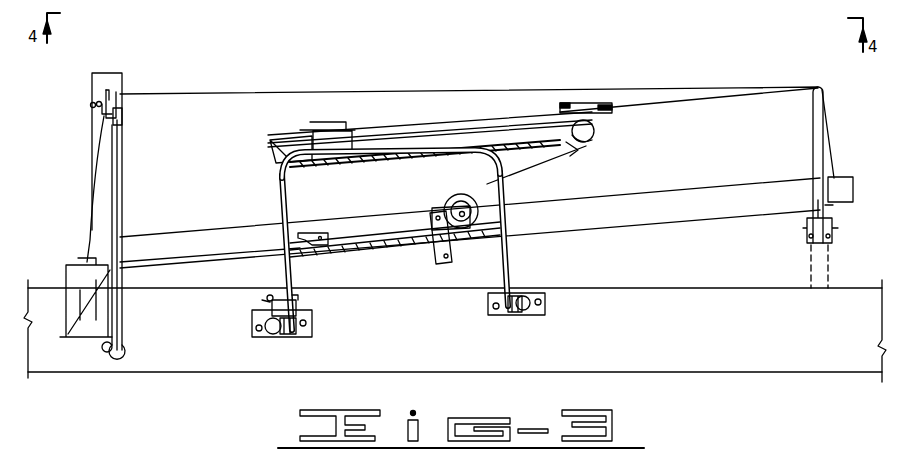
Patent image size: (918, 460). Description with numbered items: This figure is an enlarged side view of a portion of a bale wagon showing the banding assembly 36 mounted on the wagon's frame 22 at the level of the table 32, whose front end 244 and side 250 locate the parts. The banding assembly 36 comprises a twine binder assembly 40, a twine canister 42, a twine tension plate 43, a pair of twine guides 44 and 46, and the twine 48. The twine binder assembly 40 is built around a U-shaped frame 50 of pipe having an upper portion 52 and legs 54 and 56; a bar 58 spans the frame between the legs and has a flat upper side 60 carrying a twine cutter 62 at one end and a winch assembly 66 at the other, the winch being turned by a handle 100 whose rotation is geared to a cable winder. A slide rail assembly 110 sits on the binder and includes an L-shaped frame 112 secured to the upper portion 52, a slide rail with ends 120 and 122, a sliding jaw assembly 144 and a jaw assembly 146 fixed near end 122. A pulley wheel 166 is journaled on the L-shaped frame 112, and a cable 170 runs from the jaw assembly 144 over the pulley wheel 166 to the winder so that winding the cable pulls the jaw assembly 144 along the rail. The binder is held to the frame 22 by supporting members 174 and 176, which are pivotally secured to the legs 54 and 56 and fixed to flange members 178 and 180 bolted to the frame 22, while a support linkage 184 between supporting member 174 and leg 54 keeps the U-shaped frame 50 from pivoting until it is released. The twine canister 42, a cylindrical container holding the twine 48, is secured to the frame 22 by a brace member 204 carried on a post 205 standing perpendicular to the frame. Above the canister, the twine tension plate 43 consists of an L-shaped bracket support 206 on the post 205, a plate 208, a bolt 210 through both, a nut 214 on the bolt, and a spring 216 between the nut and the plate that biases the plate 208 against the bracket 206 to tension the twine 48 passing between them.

The frame 22 is at (684, 362).
The table 32 is at (682, 205).
The banding assembly 36 is at (216, 130).
The twine binder assembly 40 is at (384, 116).
The twine canister 42 is at (74, 280).
The twine tension plate 43 is at (112, 94).
The twine guide 44 is at (822, 459).
The twine guide 46 is at (824, 90).
The twine 48 is at (478, 94).
The U-shaped frame 50 is at (414, 240).
The upper portion 52 is at (368, 158).
The leg 54 is at (290, 275).
The leg 56 is at (502, 266).
The bar 58 is at (364, 248).
The upper side 60 is at (350, 250).
The twine cutter 62 is at (308, 232).
The winch assembly 66 is at (452, 208).
The handle 100 is at (438, 258).
The slide rail assembly 110 is at (456, 120).
The L-shaped frame 112 is at (508, 146).
The end 120 is at (268, 140).
The end 122 is at (592, 120).
The jaw assembly 144 is at (325, 128).
The jaw assembly 146 is at (580, 104).
The pulley wheel 166 is at (592, 136).
The cable 170 is at (568, 152).
The supporting member 174 is at (276, 334).
The supporting member 176 is at (522, 312).
The flange member 178 is at (264, 334).
The flange member 180 is at (498, 314).
The support linkage 184 is at (268, 301).
The brace member 204 is at (117, 305).
The post 205 is at (118, 205).
The L-shaped bracket support 206 is at (123, 122).
The plate 208 is at (103, 113).
The bolt 210 is at (104, 90).
The nut 214 is at (91, 105).
The spring 216 is at (98, 102).
The front end 244 is at (874, 150).
The side 250 is at (176, 247).